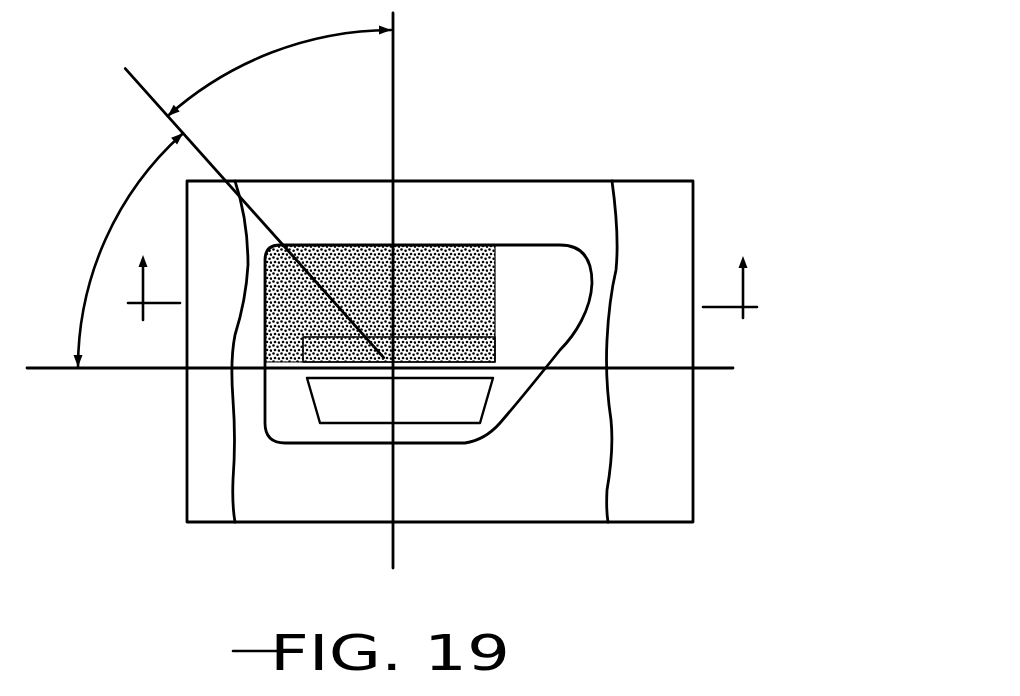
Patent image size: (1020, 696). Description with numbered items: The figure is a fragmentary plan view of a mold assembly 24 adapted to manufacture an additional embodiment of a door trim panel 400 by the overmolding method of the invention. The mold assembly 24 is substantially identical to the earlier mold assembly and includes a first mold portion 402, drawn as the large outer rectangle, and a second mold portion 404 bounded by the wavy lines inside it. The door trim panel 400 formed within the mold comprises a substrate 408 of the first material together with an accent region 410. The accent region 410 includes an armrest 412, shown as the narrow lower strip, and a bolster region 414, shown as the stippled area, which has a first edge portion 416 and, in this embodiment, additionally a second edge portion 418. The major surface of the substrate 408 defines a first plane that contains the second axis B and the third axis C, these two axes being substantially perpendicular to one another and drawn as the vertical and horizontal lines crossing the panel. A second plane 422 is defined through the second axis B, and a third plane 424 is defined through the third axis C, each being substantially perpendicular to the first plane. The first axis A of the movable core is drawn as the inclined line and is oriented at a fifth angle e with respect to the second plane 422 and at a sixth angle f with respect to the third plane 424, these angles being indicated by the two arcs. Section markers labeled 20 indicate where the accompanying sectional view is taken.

The section line 20- 20 is at (448, 297).
The mold assembly 24 is at (790, 52).
The door trim panel 400 is at (564, 234).
The first mold portion 402 is at (553, 512).
The second mold portion 404 is at (679, 218).
The substrate 408 is at (522, 388).
The accent region 410 is at (477, 235).
The armrest 412 is at (495, 347).
The bolster region 414 is at (420, 263).
The first edge portion 416 is at (368, 245).
The second edge portion 418 is at (265, 325).
The second plane 422 is at (395, 48).
The third plane 424 is at (705, 371).
The first axis A is at (143, 90).
The second axis B is at (378, 85).
The third axis C is at (719, 362).
The fifth angle e is at (258, 50).
The sixth angle f is at (107, 236).